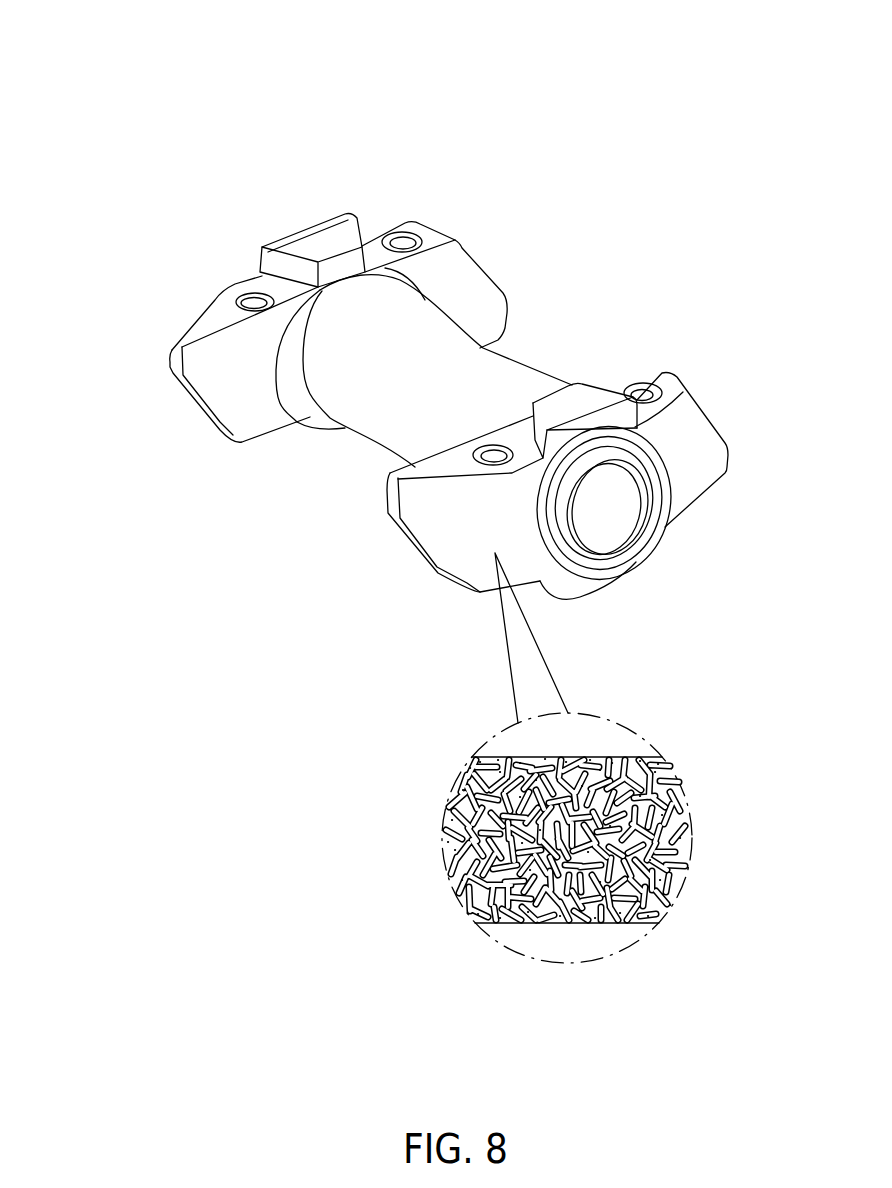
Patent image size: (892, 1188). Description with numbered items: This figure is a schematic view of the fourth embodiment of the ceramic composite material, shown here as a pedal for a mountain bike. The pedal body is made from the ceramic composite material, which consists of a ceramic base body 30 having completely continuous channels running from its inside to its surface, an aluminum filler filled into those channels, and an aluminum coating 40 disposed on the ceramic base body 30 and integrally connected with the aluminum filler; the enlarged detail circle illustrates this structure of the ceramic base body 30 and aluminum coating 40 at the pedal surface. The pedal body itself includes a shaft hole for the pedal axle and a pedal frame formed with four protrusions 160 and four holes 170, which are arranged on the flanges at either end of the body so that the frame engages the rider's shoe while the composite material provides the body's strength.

The protrusion 160 is at (210, 323).
The hole 170 is at (247, 307).
The ceramic base body 30 is at (450, 808).
The aluminum coating 40 is at (602, 757).